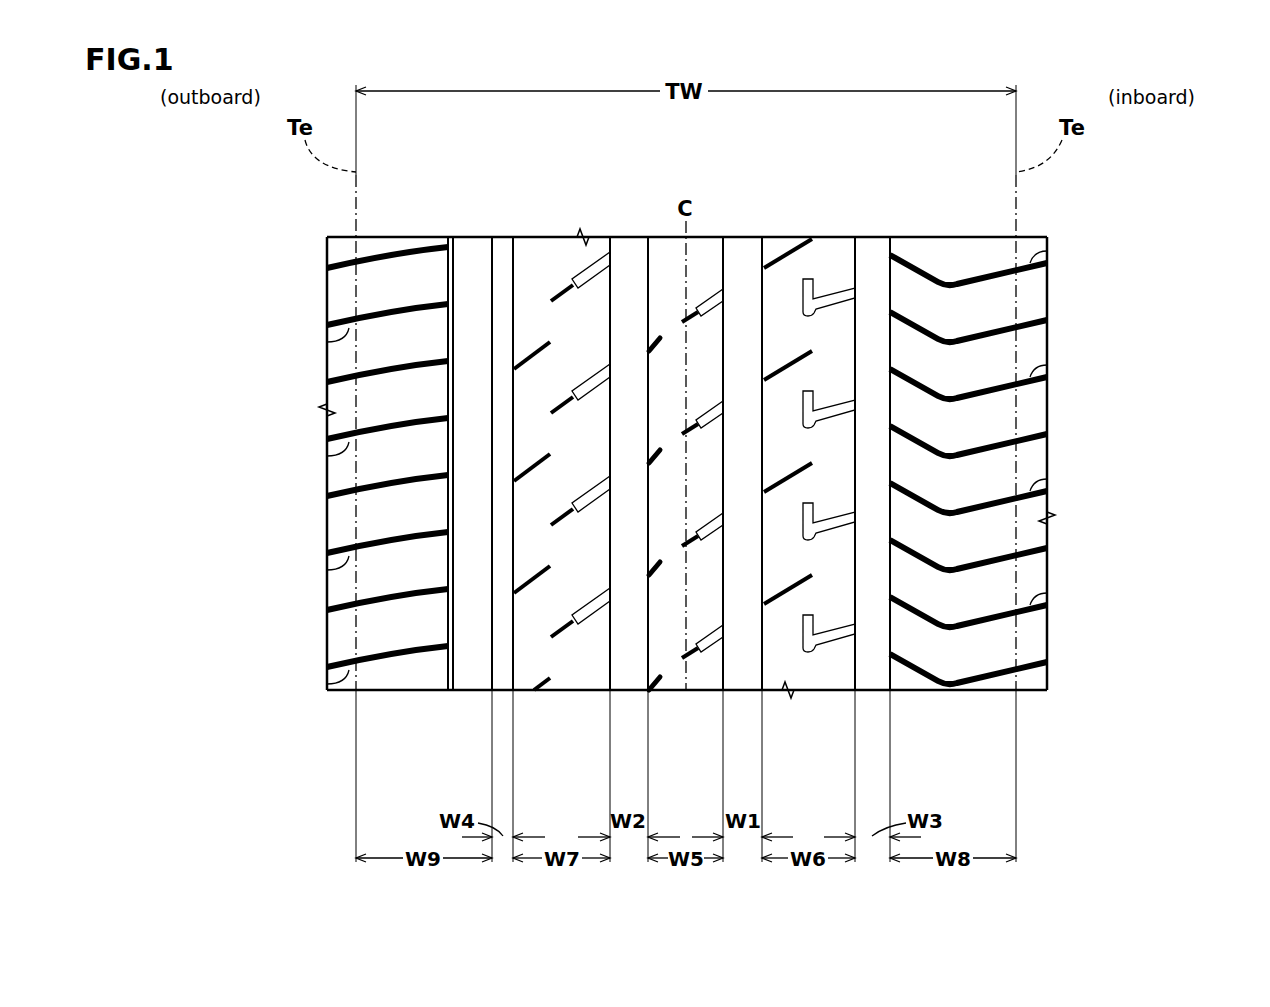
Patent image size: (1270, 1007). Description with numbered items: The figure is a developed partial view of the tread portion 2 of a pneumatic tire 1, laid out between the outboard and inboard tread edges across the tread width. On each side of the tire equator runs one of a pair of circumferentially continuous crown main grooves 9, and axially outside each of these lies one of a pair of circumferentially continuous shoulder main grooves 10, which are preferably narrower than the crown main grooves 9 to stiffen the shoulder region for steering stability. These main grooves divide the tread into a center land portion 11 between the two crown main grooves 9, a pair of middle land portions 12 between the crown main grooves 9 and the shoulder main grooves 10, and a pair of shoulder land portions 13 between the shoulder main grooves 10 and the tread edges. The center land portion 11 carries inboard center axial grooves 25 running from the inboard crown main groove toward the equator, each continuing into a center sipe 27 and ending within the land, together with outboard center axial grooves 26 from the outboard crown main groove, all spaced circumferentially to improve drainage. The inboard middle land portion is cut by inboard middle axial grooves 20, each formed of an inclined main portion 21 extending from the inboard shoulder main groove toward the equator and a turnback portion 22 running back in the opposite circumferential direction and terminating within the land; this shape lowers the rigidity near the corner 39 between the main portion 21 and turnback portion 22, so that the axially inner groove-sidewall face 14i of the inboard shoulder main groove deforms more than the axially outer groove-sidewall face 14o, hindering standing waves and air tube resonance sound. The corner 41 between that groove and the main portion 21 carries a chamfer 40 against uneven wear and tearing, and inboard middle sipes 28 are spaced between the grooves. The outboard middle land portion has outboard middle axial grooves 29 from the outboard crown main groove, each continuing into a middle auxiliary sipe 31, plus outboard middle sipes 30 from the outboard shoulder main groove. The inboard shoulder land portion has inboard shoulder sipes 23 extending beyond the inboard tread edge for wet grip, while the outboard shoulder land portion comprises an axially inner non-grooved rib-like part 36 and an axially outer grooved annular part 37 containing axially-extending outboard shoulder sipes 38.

The pneumatic tire 1 is at (753, 417).
The tread portion 2 is at (1040, 213).
The crown main grooves 9 is at (630, 262).
The shoulder main grooves 10 is at (720, 413).
The center land portion 11 is at (705, 448).
The middle land portions 12 is at (883, 448).
The shoulder land portions 13 is at (699, 413).
The axially inner groove-sidewall face 14i is at (857, 262).
The axially outer groove-sidewall face 14o is at (871, 256).
The inboard middle axial grooves 20 is at (1027, 519).
The main portion 21 is at (840, 500).
The turnback portion 22 is at (999, 462).
The inboard shoulder sipes 23 is at (950, 508).
The inboard center axial grooves 25 is at (721, 524).
The outboard center axial grooves 26 is at (652, 565).
The center sipe 27 is at (725, 410).
The inboard middle sipes 28 is at (783, 596).
The outboard middle axial grooves 29 is at (612, 578).
The outboard middle sipes 30 is at (531, 585).
The middle auxiliary sipe 31 is at (597, 505).
The non-grooved rib-like part 36 is at (450, 262).
The grooved annular part 37 is at (326, 432).
The outboard shoulder sipes 38 is at (352, 378).
The corner 39 is at (813, 660).
The chamfer 40 is at (1022, 685).
The corner 41 is at (1022, 685).